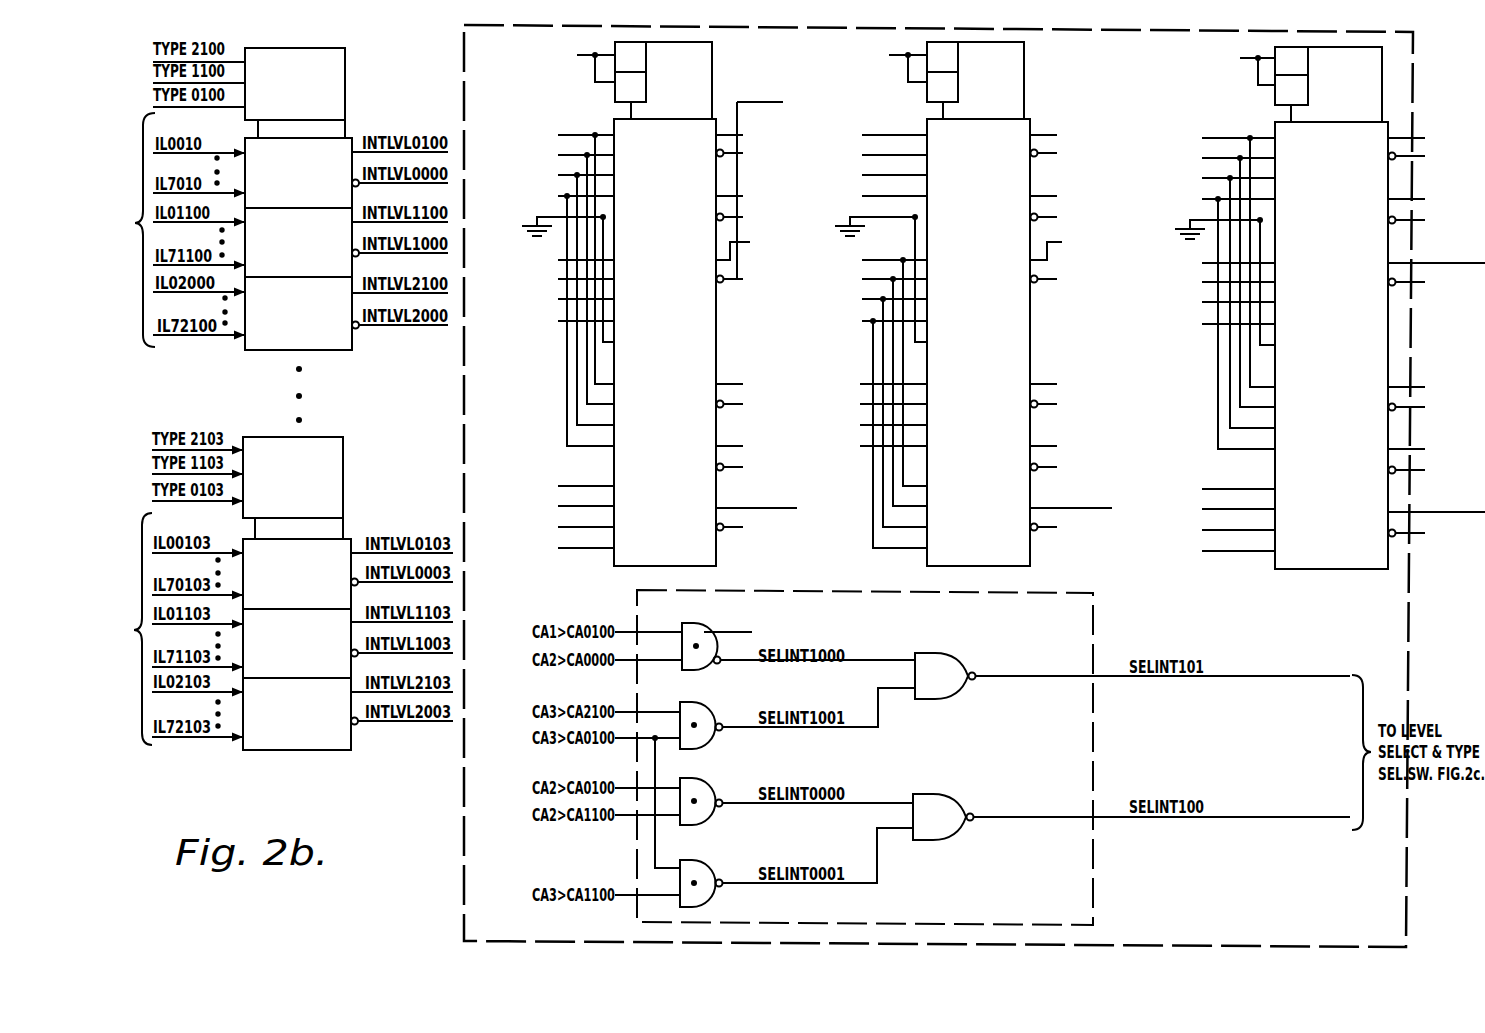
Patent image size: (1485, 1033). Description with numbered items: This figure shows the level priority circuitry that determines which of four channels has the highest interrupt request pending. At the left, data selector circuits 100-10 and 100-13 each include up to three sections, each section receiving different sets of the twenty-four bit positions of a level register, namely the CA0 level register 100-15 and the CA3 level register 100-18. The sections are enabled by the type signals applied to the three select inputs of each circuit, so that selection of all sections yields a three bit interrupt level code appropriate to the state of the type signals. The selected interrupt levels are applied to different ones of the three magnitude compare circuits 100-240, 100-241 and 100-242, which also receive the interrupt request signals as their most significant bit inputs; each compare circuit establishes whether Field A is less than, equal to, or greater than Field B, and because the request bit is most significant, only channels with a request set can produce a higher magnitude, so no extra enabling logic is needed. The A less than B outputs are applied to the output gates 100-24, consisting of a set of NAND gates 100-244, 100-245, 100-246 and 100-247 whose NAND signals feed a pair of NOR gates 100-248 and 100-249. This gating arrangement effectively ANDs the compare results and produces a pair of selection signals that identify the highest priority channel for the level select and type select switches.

The data selector circuit 100-10 is at (288, 62).
The data selector circuit 100-13 is at (303, 443).
The CA0 level register 100-15 is at (134, 113).
The CA3 level register 100-18 is at (132, 513).
The compare circuit 100-240 is at (693, 358).
The compare circuit 100-241 is at (1010, 350).
The compare circuit 100-242 is at (1318, 563).
The NAND gate 100-244 is at (695, 630).
The NAND gate 100-245 is at (688, 708).
The NAND gate 100-246 is at (688, 788).
The NAND gate 100-247 is at (688, 865).
The NOR gate 100-248 is at (937, 660).
The NOR gate 100-249 is at (923, 798).
The output gates 100-24 is at (1322, 654).